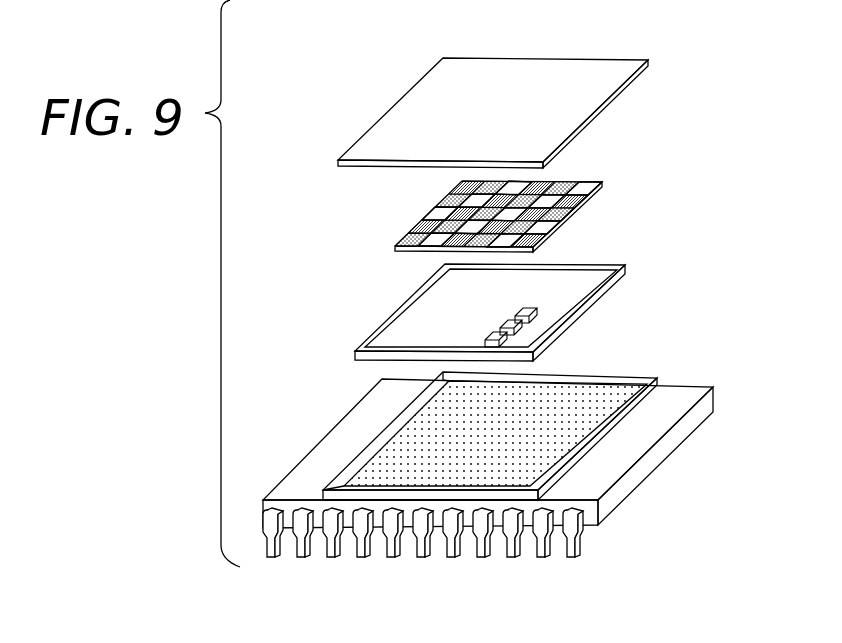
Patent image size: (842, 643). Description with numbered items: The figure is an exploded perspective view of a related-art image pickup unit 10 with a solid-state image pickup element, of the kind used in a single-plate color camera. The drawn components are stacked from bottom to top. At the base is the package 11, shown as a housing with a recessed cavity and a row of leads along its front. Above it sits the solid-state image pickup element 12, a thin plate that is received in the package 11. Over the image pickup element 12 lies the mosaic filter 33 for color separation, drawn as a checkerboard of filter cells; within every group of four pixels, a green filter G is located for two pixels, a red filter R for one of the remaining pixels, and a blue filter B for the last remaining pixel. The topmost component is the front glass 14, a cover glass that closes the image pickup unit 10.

The image pickup unit 10 is at (580, 43).
The front glass 14 is at (577, 107).
The mosaic filter 33 is at (597, 215).
The blue filter B is at (593, 182).
The green filter G is at (430, 215).
The red filter R is at (421, 239).
The solid-state image pickup element 12 is at (562, 295).
The package 11 is at (630, 442).